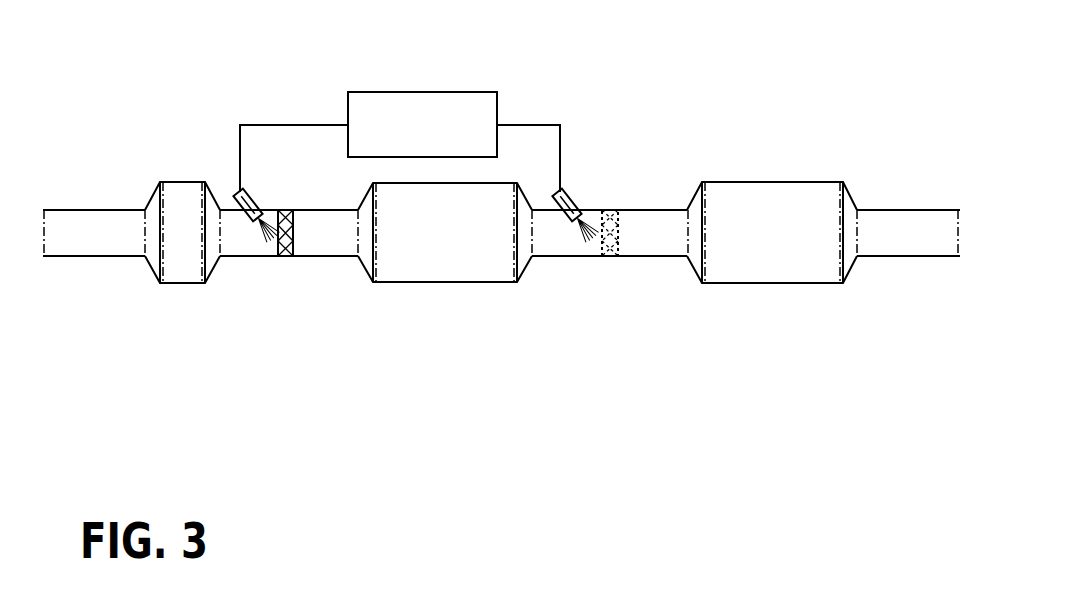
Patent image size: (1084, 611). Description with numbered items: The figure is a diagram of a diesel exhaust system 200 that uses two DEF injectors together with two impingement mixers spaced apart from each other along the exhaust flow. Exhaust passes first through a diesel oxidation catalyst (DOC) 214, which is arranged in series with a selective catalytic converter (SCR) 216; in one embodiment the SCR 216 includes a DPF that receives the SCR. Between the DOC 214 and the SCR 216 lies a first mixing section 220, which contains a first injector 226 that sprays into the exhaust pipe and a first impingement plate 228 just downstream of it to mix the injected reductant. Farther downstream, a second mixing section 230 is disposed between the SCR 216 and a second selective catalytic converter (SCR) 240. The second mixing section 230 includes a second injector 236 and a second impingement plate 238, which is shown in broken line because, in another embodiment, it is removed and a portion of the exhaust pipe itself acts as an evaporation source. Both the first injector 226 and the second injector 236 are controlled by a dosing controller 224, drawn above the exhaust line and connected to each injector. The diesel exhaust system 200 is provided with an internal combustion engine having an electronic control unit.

The diesel exhaust system 200 is at (133, 322).
The diesel oxidation catalyst (DOC) 214 is at (175, 180).
The selective catalytic converter (SCR) 216 is at (432, 283).
The first mixing section 220 is at (277, 263).
The dosing controller 224 is at (390, 92).
The first injector 226 is at (240, 200).
The first impingement plate 228 is at (297, 225).
The second mixing section 230 is at (607, 269).
The second injector 236 is at (572, 194).
The second impingement plate 238 is at (619, 231).
The selective catalytic converter (SCR) 240 is at (783, 182).